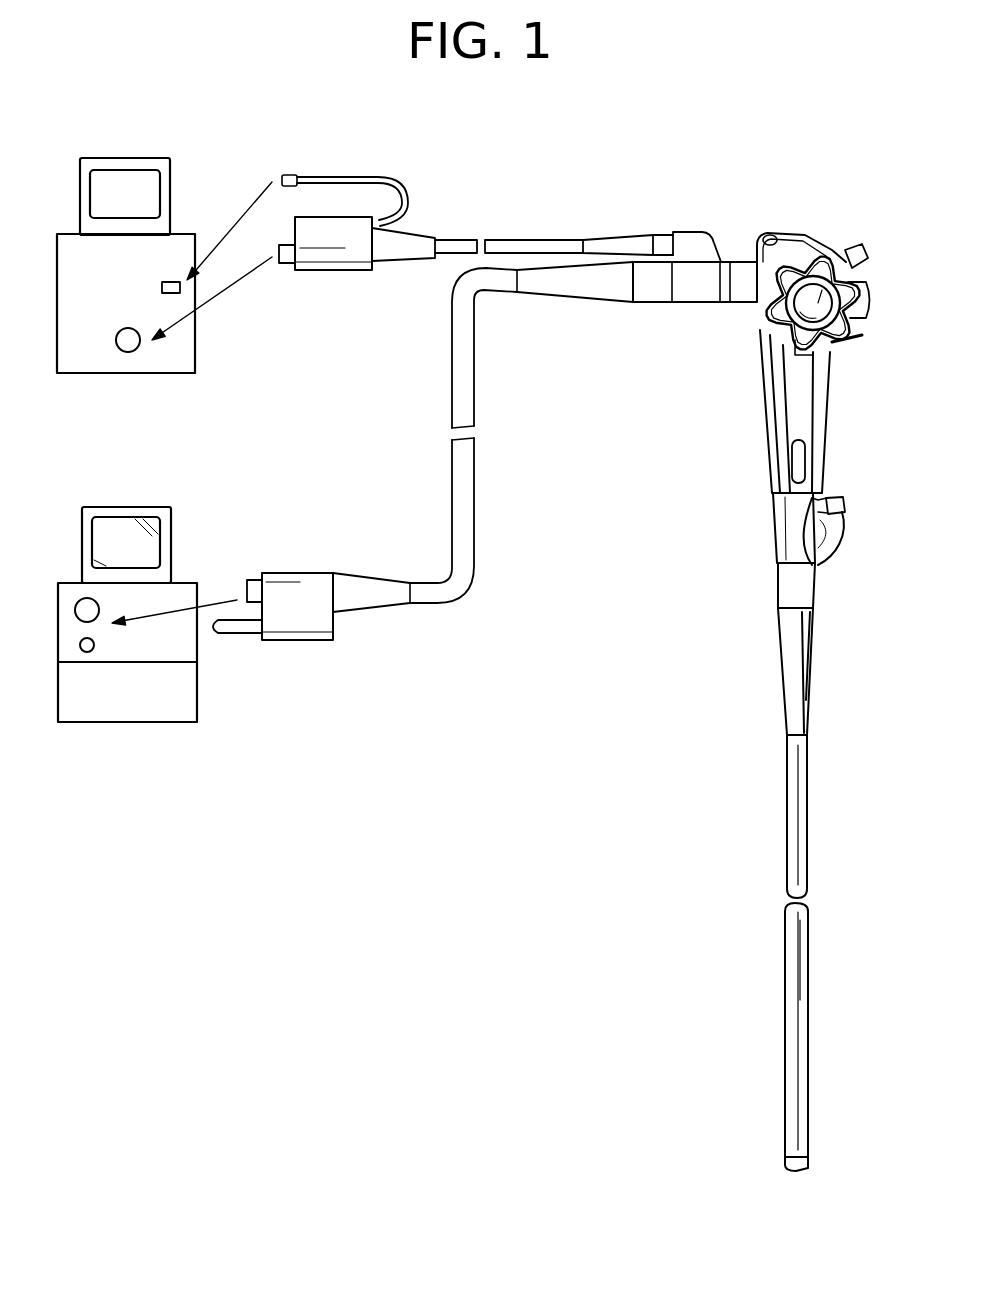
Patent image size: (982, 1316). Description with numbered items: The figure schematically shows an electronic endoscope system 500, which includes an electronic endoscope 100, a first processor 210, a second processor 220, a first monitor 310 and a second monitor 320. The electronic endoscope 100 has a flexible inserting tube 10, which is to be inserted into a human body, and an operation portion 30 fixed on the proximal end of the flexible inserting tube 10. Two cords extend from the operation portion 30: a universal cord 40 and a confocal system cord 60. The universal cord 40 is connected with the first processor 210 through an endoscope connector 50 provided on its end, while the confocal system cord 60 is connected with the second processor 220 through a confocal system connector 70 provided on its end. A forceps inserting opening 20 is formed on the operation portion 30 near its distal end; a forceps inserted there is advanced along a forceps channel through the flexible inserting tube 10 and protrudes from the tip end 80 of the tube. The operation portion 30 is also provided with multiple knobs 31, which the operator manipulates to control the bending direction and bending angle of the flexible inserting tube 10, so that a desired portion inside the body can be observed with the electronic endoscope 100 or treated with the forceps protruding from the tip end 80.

The flexible inserting tube 10 is at (785, 862).
The forceps inserting opening 20 is at (827, 537).
The operation portion 30 is at (745, 402).
The knobs 31 is at (840, 252).
The universal cord 40 is at (477, 553).
The endoscope connector 50 is at (300, 641).
The confocal system cord 60 is at (521, 238).
The confocal system connector 70 is at (340, 271).
The tip end 80 is at (810, 1161).
The electronic endoscope 100 is at (688, 217).
The first processor 210 is at (133, 723).
The second processor 220 is at (130, 374).
The first monitor 310 is at (171, 540).
The second monitor 320 is at (171, 188).
The electronic endoscope system 500 is at (478, 1057).